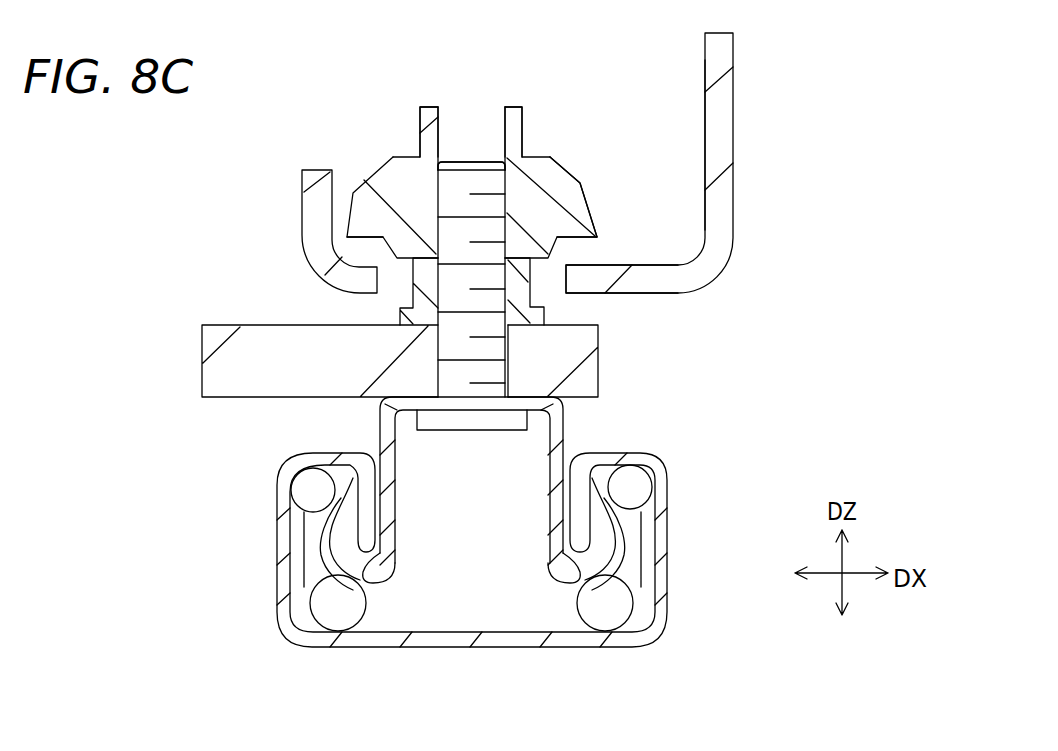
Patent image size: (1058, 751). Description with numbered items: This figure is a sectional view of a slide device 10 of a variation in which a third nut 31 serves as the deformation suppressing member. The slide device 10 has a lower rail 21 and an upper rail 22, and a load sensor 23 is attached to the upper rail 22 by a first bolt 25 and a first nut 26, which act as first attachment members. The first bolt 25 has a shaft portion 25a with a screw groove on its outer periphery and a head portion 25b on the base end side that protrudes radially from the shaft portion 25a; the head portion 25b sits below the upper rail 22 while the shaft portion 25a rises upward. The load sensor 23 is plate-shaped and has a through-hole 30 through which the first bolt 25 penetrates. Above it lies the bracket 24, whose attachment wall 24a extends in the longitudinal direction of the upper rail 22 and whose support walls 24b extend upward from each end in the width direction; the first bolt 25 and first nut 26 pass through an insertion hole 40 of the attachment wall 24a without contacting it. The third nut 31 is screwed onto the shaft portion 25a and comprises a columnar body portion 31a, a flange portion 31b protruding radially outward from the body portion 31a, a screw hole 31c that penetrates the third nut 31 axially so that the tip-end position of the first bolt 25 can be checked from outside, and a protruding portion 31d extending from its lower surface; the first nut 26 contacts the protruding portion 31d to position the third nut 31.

The slide device 10 is at (709, 385).
The lower rail 21 is at (276, 555).
The upper rail 22 is at (566, 441).
The load sensor 23 is at (222, 324).
The bracket 24 is at (735, 50).
The attachment wall 24a is at (645, 264).
The support wall 24b is at (302, 200).
The first bolt 25 is at (507, 186).
The shaft portion 25a is at (479, 158).
The head portion 25b is at (457, 432).
The first nut 26 is at (402, 274).
The through-hole 30 is at (494, 362).
The third nut 31 is at (523, 134).
The body portion 31a is at (513, 105).
The flange portion 31b is at (594, 207).
The screw hole 31c is at (441, 110).
The protruding portion 31d is at (537, 266).
The insertion hole 40 is at (380, 230).